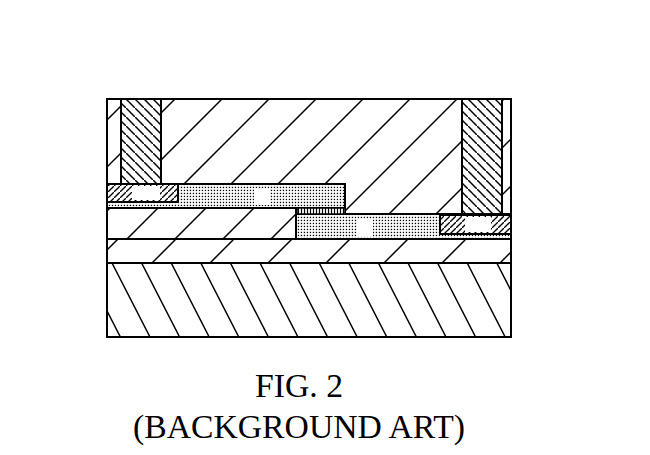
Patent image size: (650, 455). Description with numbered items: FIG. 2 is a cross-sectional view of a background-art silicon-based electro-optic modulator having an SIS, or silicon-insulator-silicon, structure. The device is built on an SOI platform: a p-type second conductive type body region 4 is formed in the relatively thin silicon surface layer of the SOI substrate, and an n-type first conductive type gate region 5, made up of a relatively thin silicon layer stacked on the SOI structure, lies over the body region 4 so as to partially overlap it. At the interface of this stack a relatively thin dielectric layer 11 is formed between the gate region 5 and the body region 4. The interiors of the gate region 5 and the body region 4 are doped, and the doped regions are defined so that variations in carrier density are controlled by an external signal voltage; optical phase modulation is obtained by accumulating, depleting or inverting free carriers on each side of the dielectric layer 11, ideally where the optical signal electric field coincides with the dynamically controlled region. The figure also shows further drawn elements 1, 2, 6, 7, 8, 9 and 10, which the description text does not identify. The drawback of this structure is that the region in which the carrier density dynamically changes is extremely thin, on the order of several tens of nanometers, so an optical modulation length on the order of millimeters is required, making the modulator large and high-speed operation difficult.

The semiconductor substrate 1 is at (497, 315).
The buried insulating layer 2 is at (497, 250).
The second conductive type body region 4 is at (440, 215).
The first conductive type gate region 5 is at (200, 190).
The p+ contact region 6 is at (512, 222).
The n+ contact region 7 is at (120, 192).
The insulating layer 8 is at (358, 125).
The electrode 9 is at (481, 103).
The electrode 10 is at (130, 105).
The dielectric layer 11 is at (297, 213).